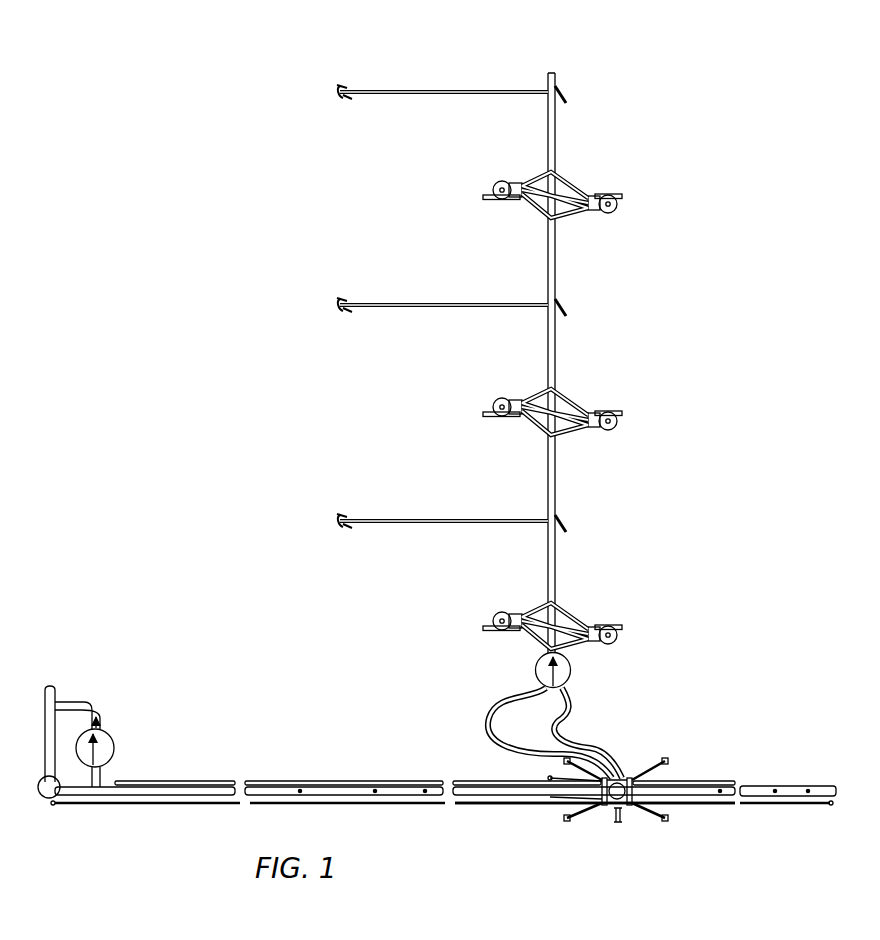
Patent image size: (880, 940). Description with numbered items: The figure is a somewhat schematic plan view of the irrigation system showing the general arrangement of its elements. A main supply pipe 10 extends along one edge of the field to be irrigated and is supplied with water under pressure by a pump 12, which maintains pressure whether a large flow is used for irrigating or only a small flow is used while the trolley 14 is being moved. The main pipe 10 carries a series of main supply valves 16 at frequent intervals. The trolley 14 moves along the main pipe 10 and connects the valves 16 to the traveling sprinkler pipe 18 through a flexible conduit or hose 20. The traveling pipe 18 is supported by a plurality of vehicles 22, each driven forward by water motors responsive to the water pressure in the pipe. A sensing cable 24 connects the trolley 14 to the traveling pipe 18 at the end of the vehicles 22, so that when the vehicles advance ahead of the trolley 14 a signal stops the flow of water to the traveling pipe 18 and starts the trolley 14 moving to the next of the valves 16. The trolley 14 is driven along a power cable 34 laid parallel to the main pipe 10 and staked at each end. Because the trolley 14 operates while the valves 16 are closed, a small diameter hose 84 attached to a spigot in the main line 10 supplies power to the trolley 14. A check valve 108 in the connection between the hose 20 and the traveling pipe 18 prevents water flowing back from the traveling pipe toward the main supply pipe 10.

The main supply pipe 10 is at (790, 782).
The pump 12 is at (58, 783).
The trolley 14 is at (627, 836).
The main supply valves 16 is at (381, 786).
The traveling sprinkler pipe 18 is at (556, 478).
The flexible conduit or hose 20 is at (486, 722).
The vehicles 22 is at (572, 403).
The sensing cable 24 is at (574, 715).
The power cable 34 is at (692, 804).
The small diameter hose 84 is at (292, 781).
The check valve 108 is at (571, 670).